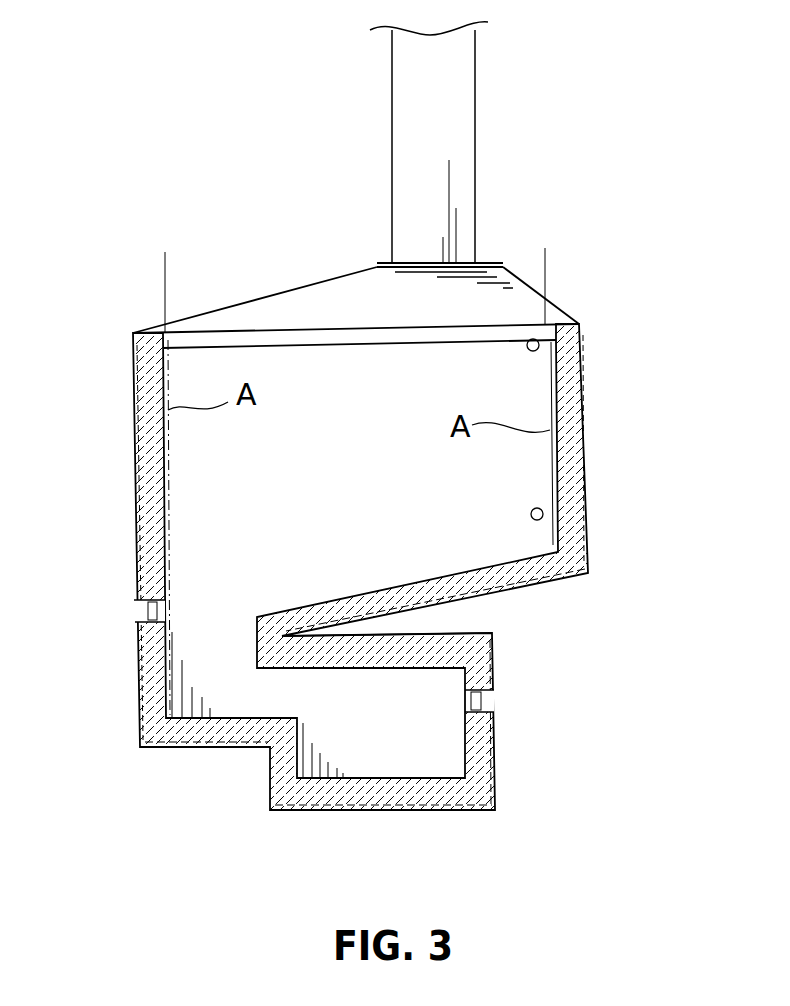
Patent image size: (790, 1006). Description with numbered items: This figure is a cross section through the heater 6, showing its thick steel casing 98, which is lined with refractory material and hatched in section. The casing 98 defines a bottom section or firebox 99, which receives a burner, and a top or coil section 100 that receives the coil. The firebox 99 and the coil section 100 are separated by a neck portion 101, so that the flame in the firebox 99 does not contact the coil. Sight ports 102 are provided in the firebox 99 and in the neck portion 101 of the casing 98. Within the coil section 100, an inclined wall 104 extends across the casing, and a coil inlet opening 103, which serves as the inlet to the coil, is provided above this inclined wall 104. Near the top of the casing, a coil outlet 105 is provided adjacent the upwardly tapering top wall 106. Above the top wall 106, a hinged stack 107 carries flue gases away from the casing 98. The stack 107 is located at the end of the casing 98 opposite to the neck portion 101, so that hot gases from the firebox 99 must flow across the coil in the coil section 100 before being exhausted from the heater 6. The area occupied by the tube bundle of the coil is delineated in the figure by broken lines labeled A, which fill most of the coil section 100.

The heater 6 is at (343, 203).
The casing 98 is at (586, 410).
The firebox 99 is at (445, 752).
The coil section 100 is at (533, 478).
The neck portion 101 is at (205, 647).
The sight ports 102 is at (150, 612).
The coil inlet opening 103 is at (525, 515).
The inclined wall 104 is at (415, 596).
The coil outlet 105 is at (524, 352).
The top wall 106 is at (430, 317).
The hinged stack 107 is at (460, 148).